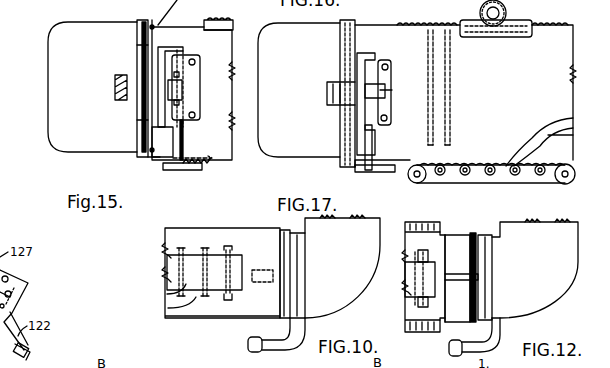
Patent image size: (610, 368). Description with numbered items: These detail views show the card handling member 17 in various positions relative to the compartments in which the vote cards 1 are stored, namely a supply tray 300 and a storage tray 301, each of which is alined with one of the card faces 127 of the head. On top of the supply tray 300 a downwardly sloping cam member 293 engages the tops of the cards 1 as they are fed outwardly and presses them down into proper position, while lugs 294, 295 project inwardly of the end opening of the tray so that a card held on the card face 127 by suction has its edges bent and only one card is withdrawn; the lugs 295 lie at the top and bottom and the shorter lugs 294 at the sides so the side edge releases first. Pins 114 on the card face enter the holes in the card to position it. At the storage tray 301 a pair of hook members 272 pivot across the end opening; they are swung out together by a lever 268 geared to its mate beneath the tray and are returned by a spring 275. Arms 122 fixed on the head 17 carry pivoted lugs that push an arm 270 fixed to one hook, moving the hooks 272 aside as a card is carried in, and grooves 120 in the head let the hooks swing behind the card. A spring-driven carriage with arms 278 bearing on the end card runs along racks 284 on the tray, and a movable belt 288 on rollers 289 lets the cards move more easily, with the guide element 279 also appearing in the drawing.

In FIG. 15, the vote card 1 is at (150, 18).
In FIG. 12, the vote card 1 is at (490, 270).
In FIG. 15, the card handling member 17 is at (48, 52).
In FIG. 17, the card handling member 17 is at (259, 54).
In FIG. 10, the card handling member 17 is at (352, 291).
In FIG. 12, the card handling member 17 is at (553, 291).
In FIG. 10, the pins 114 is at (279, 292).
In FIG. 12, the pins 114 is at (480, 289).
In FIG. 15, the grooves 120 is at (139, 55).
In FIG. 17, the arms 122 is at (330, 107).
In FIG. 10, the card face 127 is at (291, 294).
In FIG. 15, the lever 268 is at (179, 172).
In FIG. 15, the arm 270 is at (186, 78).
In FIG. 15, the hook members 272 is at (157, 164).
In FIG. 15, the spring 275 is at (208, 168).
In FIG. 17, the arms 278 is at (467, 38).
In FIG. 17, the guide rods 279 is at (427, 133).
In FIG. 17, the racks 284 is at (554, 38).
In FIG. 17, the movable belt 288 is at (529, 186).
In FIG. 10, the movable belt 288 is at (168, 308).
In FIG. 17, the rollers 289 is at (440, 184).
In FIG. 10, the rollers 289 is at (167, 295).
In FIG. 10, the cam member 293 is at (243, 367).
In FIG. 12, the cam member 293 is at (445, 233).
In FIG. 12, the lugs 294 is at (443, 326).
In FIG. 12, the lugs 295 is at (477, 236).
In FIG. 10, the supply tray 300 is at (240, 318).
In FIG. 17, the storage tray 301 is at (364, 21).